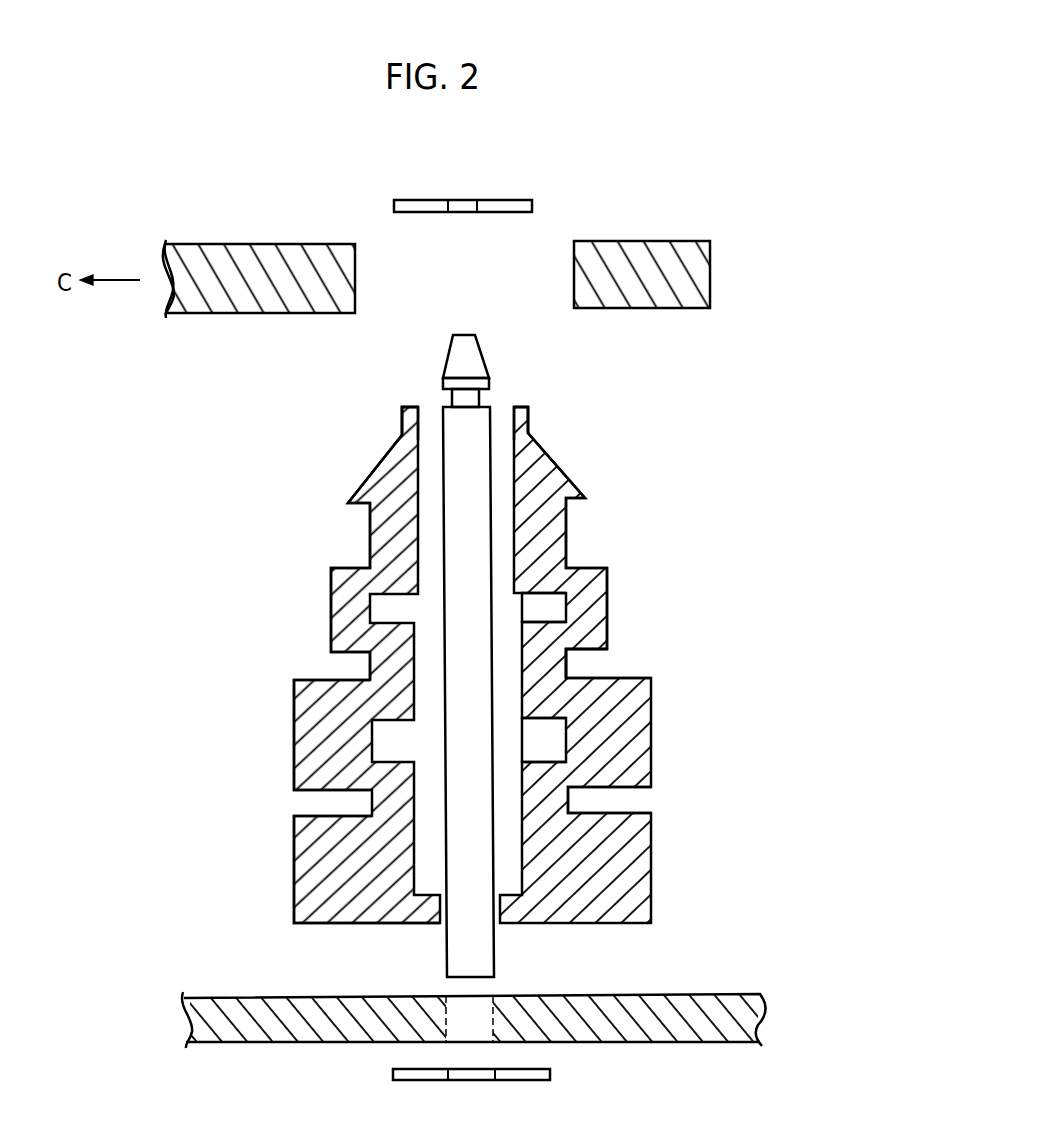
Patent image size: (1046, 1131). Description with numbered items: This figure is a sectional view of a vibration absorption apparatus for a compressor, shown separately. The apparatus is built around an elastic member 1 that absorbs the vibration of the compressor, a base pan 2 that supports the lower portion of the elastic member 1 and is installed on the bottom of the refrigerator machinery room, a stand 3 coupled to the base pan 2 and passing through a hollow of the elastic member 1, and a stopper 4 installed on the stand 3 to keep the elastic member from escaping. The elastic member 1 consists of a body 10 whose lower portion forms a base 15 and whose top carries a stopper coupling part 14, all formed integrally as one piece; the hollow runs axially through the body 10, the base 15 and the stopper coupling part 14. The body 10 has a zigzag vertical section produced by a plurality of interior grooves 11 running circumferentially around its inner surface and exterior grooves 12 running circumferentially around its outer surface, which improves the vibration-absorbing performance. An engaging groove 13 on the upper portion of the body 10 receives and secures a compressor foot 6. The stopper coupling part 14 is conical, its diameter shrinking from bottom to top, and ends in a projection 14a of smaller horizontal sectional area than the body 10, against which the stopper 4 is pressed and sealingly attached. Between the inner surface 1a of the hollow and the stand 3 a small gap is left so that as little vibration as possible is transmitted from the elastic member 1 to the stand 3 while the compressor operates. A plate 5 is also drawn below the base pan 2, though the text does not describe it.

The elastic member 1 is at (675, 714).
The inner surface of the hollow 1a is at (512, 407).
The base pan 2 is at (716, 995).
The stand 3 is at (476, 537).
The stopper 4 is at (532, 204).
The bottom plate 5 is at (550, 1074).
The compressor foot 6 is at (710, 275).
The body 10 is at (303, 718).
The interior grooves 11 is at (558, 610).
The exterior grooves 12 is at (592, 665).
The engaging groove 13 is at (587, 516).
The stopper coupling part 14 is at (377, 469).
The projection 14a is at (402, 406).
The base 15 is at (303, 862).